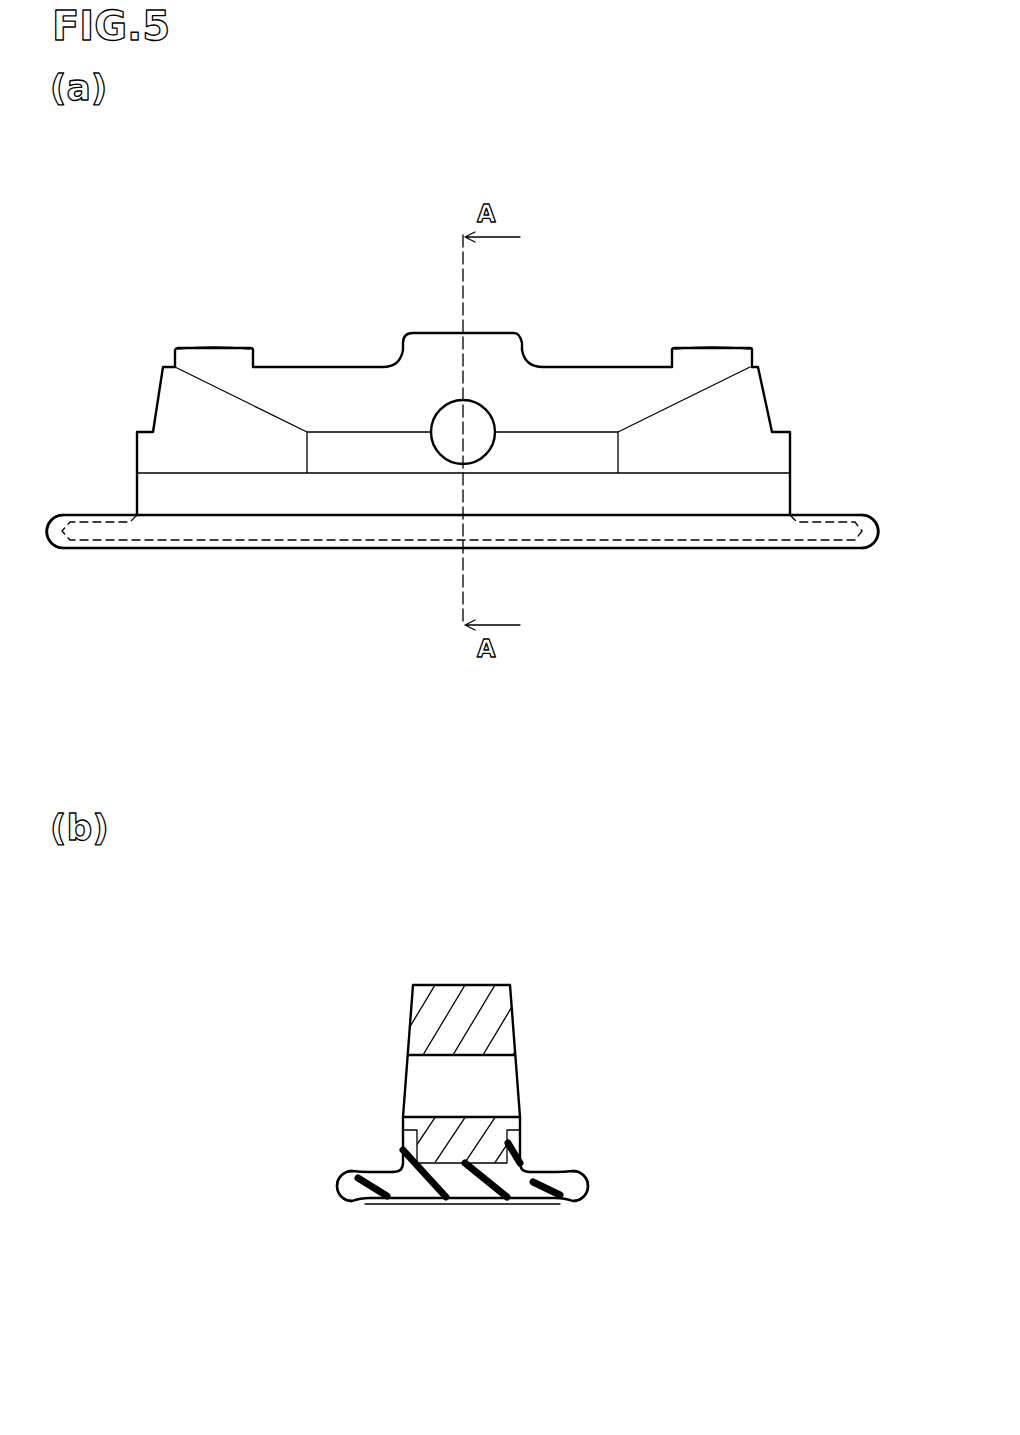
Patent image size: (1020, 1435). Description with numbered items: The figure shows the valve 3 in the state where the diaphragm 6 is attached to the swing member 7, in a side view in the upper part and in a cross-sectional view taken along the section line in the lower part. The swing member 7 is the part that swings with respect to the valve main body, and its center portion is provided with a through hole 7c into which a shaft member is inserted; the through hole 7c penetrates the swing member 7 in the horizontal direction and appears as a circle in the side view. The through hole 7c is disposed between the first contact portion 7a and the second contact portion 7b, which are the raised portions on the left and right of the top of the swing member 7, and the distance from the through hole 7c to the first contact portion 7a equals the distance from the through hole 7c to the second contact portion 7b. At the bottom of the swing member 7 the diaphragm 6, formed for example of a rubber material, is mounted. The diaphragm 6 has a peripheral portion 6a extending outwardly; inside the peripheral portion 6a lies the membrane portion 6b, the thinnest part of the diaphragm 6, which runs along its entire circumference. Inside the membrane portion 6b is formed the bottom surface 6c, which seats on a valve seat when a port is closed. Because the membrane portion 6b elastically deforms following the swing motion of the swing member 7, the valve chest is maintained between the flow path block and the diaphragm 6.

The valve 3 is at (777, 164).
The diaphragm 6 is at (588, 528).
The peripheral portion 6a is at (57, 540).
The membrane portion 6b is at (123, 537).
The bottom surface 6c is at (323, 525).
The swing member 7 is at (590, 395).
The first contact portion 7a is at (195, 358).
The second contact portion 7b is at (702, 355).
The through hole 7c is at (450, 425).